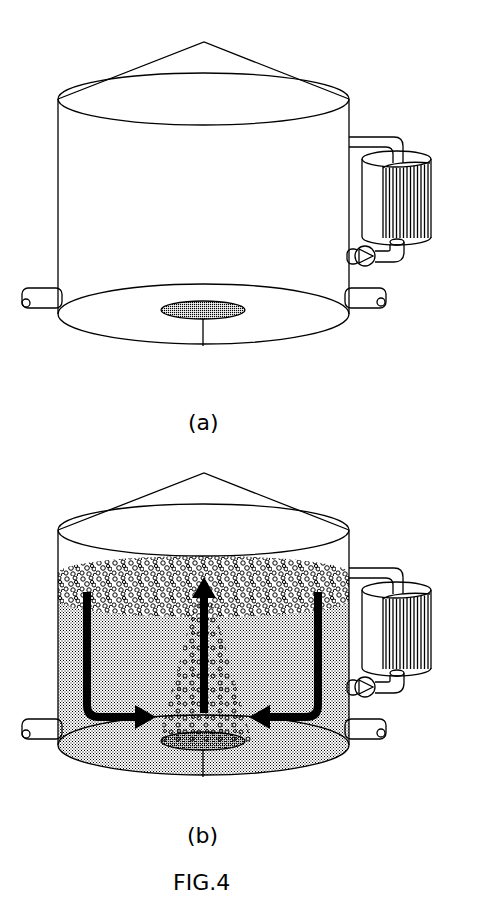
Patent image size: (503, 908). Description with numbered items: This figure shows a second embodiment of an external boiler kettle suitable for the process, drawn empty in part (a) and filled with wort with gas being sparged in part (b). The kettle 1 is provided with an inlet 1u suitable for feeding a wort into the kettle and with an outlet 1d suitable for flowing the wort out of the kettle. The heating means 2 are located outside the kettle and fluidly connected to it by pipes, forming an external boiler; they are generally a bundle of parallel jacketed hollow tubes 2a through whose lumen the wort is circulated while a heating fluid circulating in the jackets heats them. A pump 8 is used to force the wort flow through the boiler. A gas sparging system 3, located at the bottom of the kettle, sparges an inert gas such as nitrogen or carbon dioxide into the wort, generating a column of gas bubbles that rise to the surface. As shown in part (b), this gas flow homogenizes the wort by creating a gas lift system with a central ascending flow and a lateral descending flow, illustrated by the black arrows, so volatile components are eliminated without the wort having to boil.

The kettle 1 is at (102, 56).
The inlet 1u is at (52, 283).
The outlet 1d is at (358, 313).
The heating means 2 is at (406, 192).
The hollow tubes 2a is at (434, 189).
The gas sparging system 3 is at (222, 319).
The pump 8 is at (362, 247).